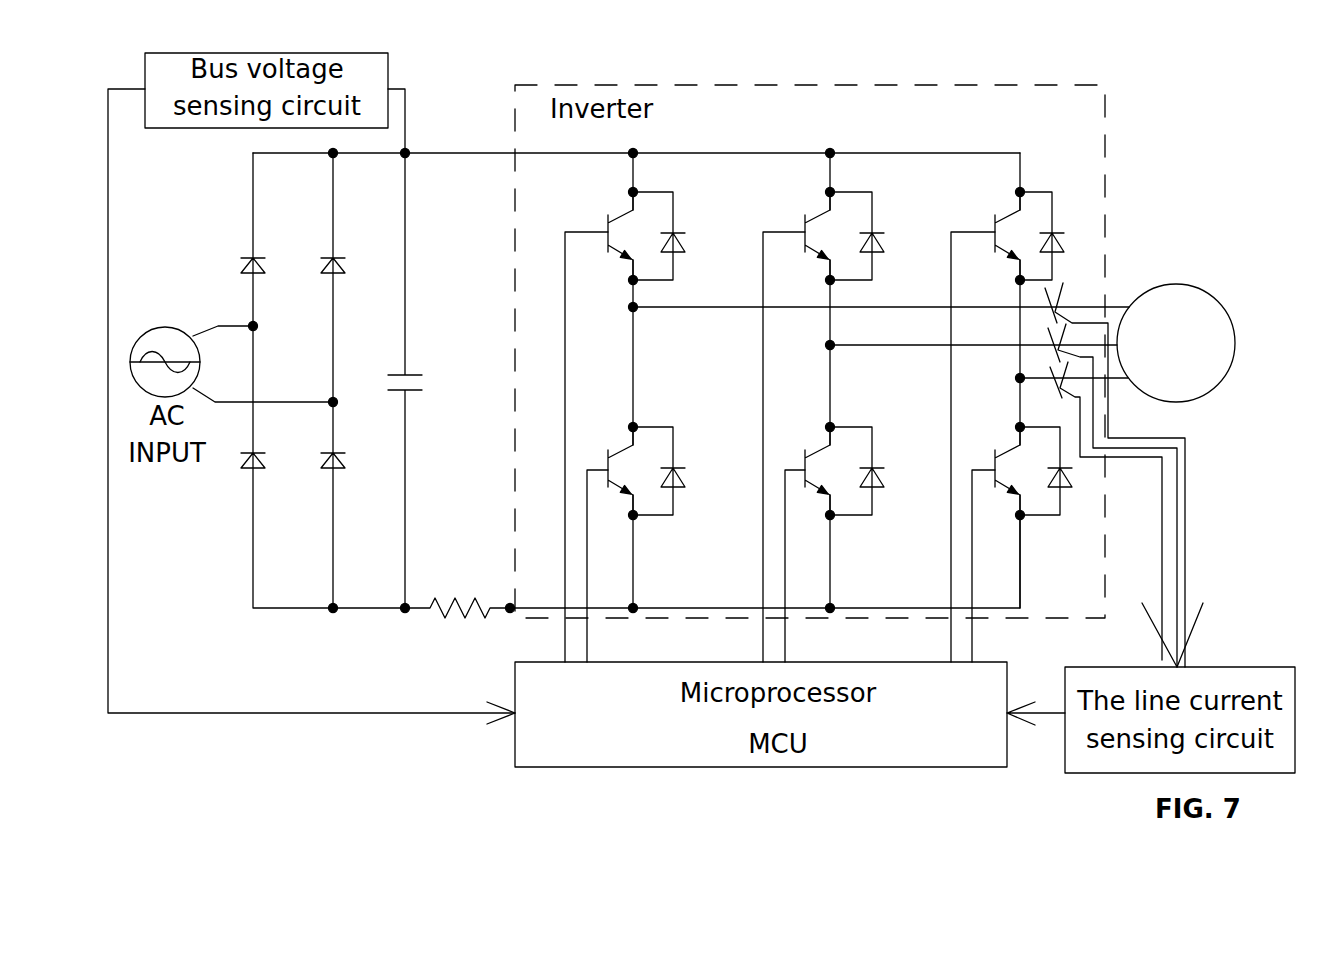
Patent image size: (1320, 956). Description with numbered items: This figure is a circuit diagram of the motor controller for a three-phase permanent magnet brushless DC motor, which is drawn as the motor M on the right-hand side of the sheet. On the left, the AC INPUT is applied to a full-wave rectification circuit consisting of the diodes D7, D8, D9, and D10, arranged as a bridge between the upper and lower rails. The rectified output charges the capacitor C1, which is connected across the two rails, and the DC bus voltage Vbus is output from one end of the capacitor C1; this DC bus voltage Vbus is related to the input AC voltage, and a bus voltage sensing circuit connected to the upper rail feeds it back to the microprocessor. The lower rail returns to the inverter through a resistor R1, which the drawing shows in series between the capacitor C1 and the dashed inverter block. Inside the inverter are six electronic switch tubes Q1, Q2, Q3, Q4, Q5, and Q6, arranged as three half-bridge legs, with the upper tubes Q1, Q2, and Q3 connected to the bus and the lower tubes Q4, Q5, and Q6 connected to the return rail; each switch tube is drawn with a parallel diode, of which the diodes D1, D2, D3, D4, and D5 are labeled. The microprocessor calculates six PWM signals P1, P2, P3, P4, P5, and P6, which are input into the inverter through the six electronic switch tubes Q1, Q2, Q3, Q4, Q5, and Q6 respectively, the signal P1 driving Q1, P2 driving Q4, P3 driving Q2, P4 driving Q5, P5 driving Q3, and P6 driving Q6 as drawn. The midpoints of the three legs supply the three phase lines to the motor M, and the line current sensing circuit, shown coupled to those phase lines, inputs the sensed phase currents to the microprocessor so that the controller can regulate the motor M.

The DC bus voltage Vbus is at (636, 135).
The capacitor C1 is at (417, 380).
The shunt resistor R1 is at (460, 590).
The diode D7 is at (270, 247).
The diode D8 is at (349, 247).
The diode D9 is at (270, 478).
The diode D10 is at (357, 478).
The electronic switch tube Q1 is at (611, 232).
The electronic switch tube Q2 is at (809, 232).
The electronic switch tube Q3 is at (996, 233).
The electronic switch tube Q4 is at (610, 468).
The electronic switch tube Q5 is at (809, 468).
The electronic switch tube Q6 is at (996, 468).
The freewheeling diode D1 is at (675, 236).
The freewheeling diode D2 is at (872, 236).
The freewheeling diode D3 is at (1057, 236).
The freewheeling diode D4 is at (679, 471).
The freewheeling diode D5 is at (873, 471).
The PWM signal P1 is at (569, 447).
The PWM signal P2 is at (608, 566).
The PWM signal P3 is at (761, 447).
The PWM signal P4 is at (805, 566).
The PWM signal P5 is at (951, 447).
The PWM signal P6 is at (993, 566).
The motor M is at (1176, 343).